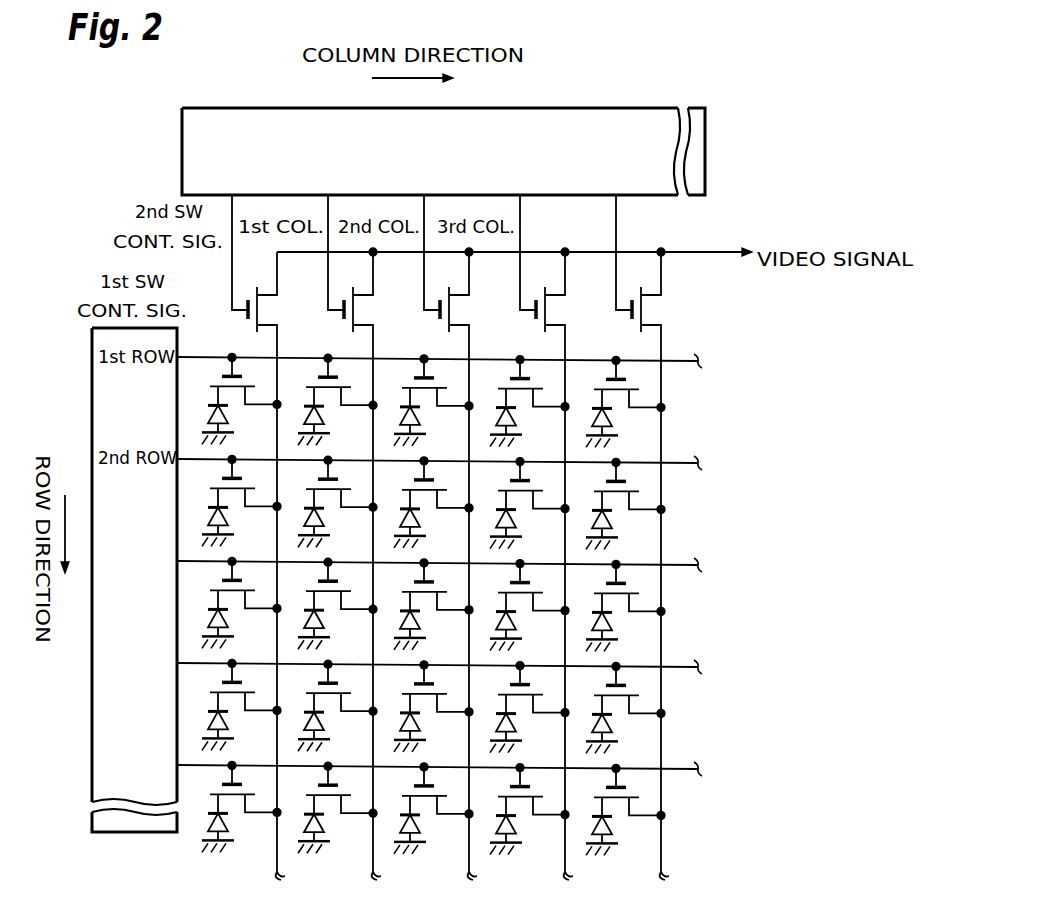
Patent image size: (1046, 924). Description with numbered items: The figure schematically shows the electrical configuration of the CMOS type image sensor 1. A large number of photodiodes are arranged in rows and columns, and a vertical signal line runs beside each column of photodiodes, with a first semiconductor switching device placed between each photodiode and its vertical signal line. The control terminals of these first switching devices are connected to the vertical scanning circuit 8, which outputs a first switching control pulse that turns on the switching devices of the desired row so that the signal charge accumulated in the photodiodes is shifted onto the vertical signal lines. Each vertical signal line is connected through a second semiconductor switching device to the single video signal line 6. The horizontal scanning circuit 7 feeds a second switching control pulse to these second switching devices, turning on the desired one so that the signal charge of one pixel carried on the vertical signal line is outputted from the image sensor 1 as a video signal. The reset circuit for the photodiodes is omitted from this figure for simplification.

The CMOS type image sensor 1 is at (716, 622).
The video signal line 6 is at (584, 252).
The horizontal scanning circuit 7 is at (520, 108).
The vertical scanning circuit 8 is at (91, 650).